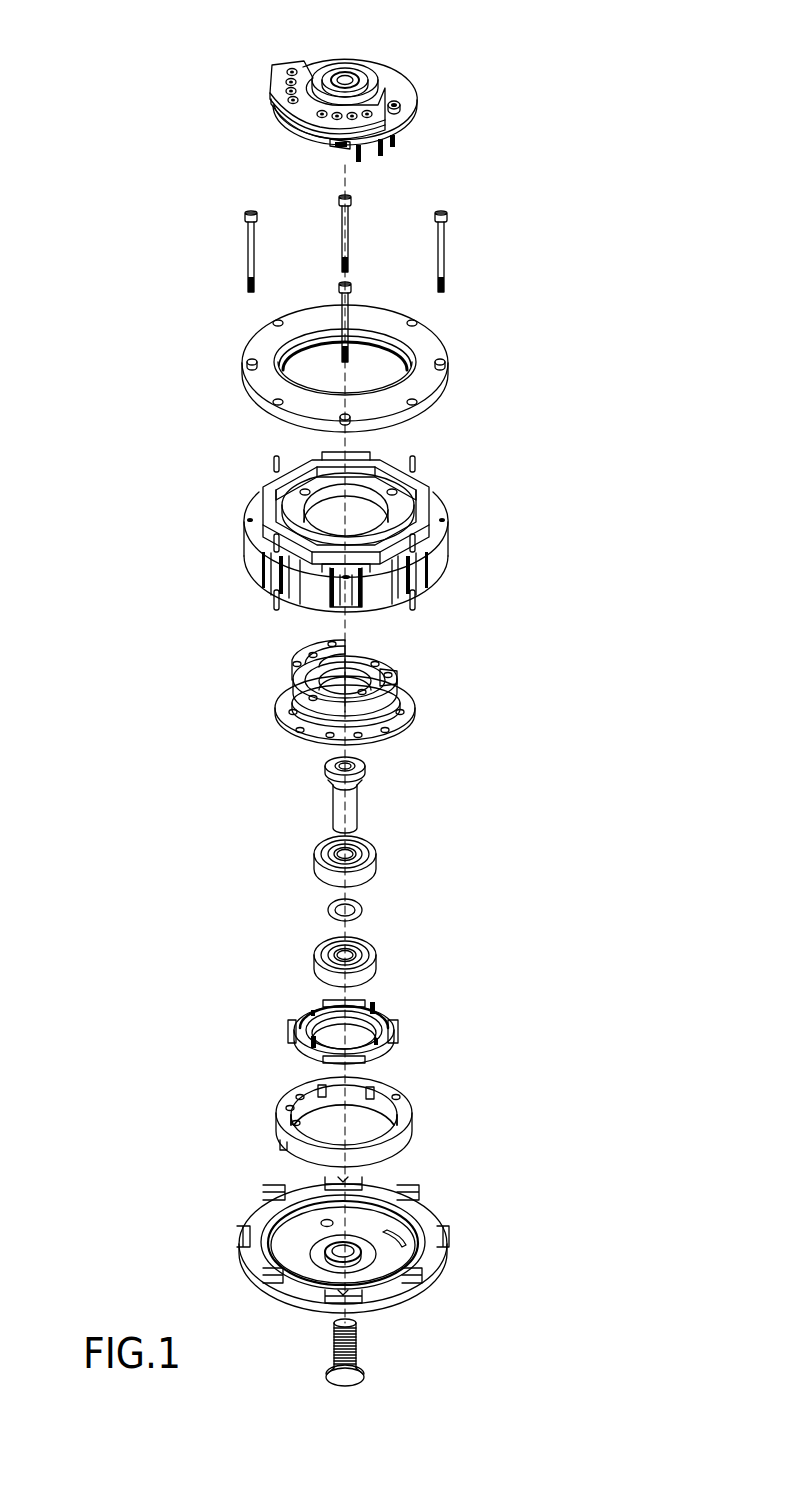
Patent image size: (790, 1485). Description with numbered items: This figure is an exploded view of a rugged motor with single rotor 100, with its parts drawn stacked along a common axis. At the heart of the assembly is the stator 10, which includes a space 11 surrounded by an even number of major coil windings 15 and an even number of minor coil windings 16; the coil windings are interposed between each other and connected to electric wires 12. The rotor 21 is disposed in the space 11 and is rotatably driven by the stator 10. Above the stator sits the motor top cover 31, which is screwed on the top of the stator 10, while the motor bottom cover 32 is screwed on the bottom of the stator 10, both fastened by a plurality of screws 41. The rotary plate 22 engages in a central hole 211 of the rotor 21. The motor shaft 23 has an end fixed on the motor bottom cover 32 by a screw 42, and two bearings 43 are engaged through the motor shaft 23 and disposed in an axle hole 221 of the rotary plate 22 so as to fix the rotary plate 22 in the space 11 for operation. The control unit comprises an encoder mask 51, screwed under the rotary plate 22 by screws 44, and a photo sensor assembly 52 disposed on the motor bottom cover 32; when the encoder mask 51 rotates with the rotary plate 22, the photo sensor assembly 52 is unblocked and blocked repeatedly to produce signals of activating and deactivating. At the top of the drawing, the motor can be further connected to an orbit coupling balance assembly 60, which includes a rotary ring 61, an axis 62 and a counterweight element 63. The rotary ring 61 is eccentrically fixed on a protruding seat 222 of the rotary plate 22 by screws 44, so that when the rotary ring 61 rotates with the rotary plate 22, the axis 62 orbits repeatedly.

The rugged motor with single rotor 100 is at (602, 195).
The stator 10 is at (537, 450).
The space 11 is at (436, 540).
The electric wires 12 is at (438, 600).
The major coil windings 15 is at (418, 478).
The minor coil windings 16 is at (435, 503).
The rotor 21 is at (383, 482).
The central hole 211 is at (293, 511).
The rotary plate 22 is at (383, 666).
The axle hole 221 is at (412, 672).
The protruding seat 222 is at (398, 683).
The motor shaft 23 is at (358, 800).
The motor top cover 31 is at (445, 345).
The motor bottom cover 32 is at (435, 1215).
The screws 41 is at (446, 251).
The screw 42 is at (360, 1345).
The bearing 43 is at (368, 869).
The screws 44 is at (394, 142).
The encoder mask 51 is at (397, 1034).
The photo sensor assembly 52 is at (405, 1118).
The orbit coupling balance assembly 60 is at (412, 61).
The rotary ring 61 is at (410, 107).
The axis 62 is at (347, 78).
The counterweight element 63 is at (298, 107).